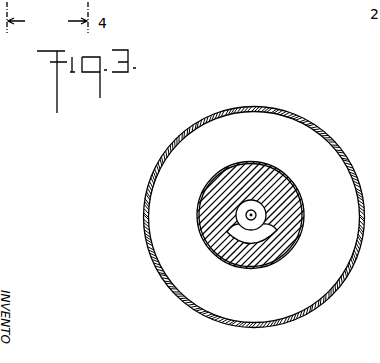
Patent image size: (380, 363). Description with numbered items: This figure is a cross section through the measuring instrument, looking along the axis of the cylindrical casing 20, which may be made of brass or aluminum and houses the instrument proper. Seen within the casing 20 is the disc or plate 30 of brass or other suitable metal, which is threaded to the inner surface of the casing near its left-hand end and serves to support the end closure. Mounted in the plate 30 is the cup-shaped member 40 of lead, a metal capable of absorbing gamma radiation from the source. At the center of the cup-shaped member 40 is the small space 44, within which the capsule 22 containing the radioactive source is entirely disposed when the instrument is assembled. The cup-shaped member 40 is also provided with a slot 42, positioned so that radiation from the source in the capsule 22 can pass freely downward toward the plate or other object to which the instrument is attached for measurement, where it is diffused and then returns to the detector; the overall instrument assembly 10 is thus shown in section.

The cable assembly 10 is at (141, 258).
The cylindrical casing 20 is at (168, 144).
The disc or plate 30 is at (302, 132).
The cup-shaped member 40 is at (242, 175).
The capsule 22 is at (266, 210).
The small space 44 is at (244, 211).
The slot 42 is at (246, 238).